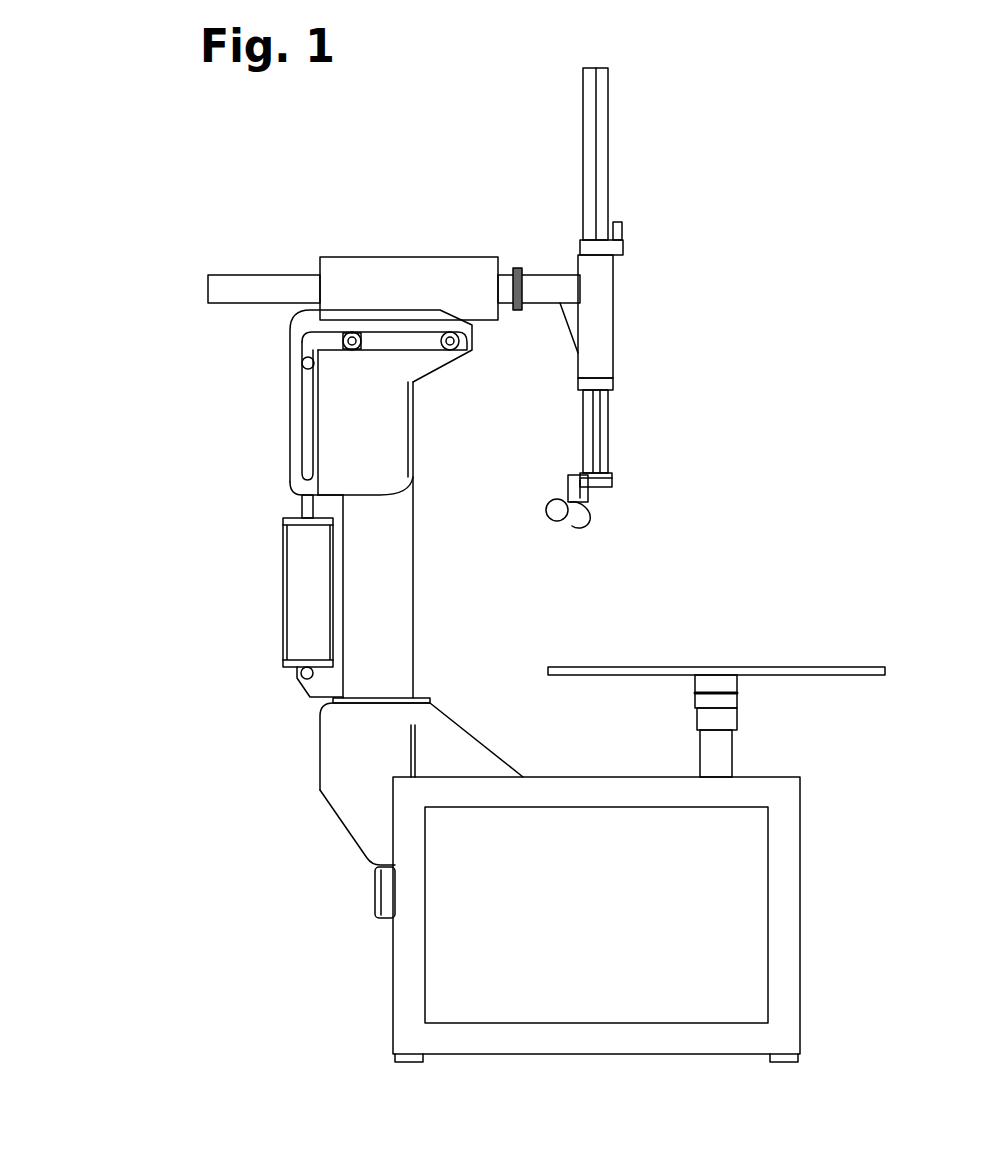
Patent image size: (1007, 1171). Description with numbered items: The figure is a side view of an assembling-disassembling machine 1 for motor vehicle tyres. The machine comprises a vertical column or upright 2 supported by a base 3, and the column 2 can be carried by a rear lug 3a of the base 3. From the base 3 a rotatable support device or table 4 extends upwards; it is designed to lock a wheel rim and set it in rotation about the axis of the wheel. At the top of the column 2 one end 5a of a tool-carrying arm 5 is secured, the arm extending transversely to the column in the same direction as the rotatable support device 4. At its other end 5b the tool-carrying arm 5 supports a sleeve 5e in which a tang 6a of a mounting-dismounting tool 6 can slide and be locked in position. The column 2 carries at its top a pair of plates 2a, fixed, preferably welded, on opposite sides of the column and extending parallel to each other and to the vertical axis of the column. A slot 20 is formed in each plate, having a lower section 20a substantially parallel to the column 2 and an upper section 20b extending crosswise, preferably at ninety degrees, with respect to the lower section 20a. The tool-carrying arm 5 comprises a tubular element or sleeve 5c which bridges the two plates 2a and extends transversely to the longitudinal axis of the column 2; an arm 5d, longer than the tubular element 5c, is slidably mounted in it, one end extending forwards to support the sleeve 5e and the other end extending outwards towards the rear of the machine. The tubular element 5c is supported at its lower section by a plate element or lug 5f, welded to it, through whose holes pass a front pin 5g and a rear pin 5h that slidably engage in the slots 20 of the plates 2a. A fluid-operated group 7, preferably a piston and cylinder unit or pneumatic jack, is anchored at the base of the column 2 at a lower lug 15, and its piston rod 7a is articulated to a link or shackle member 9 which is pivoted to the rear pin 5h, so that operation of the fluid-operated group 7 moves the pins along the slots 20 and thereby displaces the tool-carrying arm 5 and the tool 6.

The assembling-disassembling machine 1 is at (655, 145).
The vertical column 2 is at (413, 557).
The plates 2a is at (357, 437).
The base 3 is at (565, 897).
The rear lug 3a is at (368, 760).
The rotatable support device 4 is at (720, 680).
The tool-carrying arm 5 is at (368, 246).
The end of tool-carrying arm 5a is at (388, 308).
The other end of tool-carrying arm 5b is at (577, 287).
The tubular element 5c is at (418, 267).
The arm 5d is at (240, 285).
The sleeve 5e is at (593, 328).
The plate element or lug 5f is at (468, 323).
The front pin 5g is at (470, 350).
The rear pin 5h is at (365, 347).
The mounting-dismounting tool 6 is at (578, 528).
The tang 6a is at (600, 423).
The fluid-operated group 7 is at (300, 595).
The piston rod 7a is at (305, 507).
The link or shackle member 9 is at (303, 352).
The lower lug 15 is at (318, 680).
The slot 20 is at (307, 393).
The lower section of slot 20a is at (312, 442).
The upper section of slot 20b is at (390, 340).